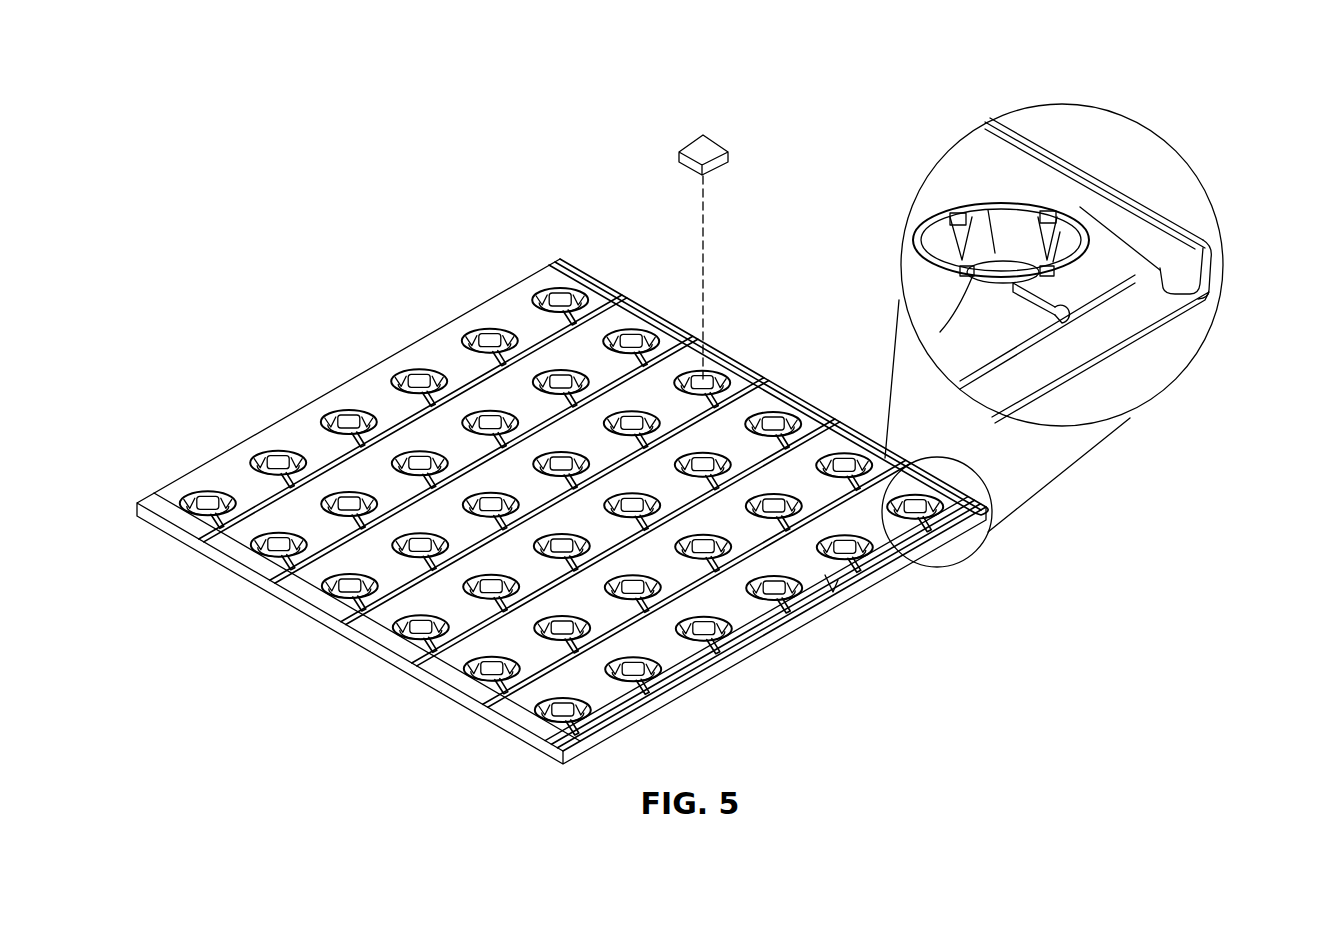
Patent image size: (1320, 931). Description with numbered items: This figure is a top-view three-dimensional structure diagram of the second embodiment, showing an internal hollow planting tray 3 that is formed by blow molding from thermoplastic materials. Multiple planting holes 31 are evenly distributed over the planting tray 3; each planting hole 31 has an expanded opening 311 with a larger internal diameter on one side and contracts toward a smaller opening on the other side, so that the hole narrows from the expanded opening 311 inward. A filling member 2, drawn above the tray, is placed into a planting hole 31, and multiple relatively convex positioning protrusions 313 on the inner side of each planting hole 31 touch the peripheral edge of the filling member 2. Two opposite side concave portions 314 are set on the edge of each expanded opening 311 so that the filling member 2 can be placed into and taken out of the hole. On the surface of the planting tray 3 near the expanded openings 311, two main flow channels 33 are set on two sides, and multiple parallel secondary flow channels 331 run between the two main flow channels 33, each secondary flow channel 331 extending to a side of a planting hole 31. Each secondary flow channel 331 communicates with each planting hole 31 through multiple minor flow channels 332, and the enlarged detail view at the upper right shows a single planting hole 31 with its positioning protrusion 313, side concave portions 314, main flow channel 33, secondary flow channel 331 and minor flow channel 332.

The filling member 2 is at (692, 168).
The planting tray 3 is at (371, 397).
The planting hole 31 is at (712, 368).
The expanded opening 311 is at (1020, 208).
The positioning protrusion 313 is at (1037, 247).
The side concave portion 314 is at (1075, 243).
The main flow channel 33 is at (782, 397).
The secondary flow channel 331 is at (830, 578).
The minor flow channel 332 is at (773, 610).